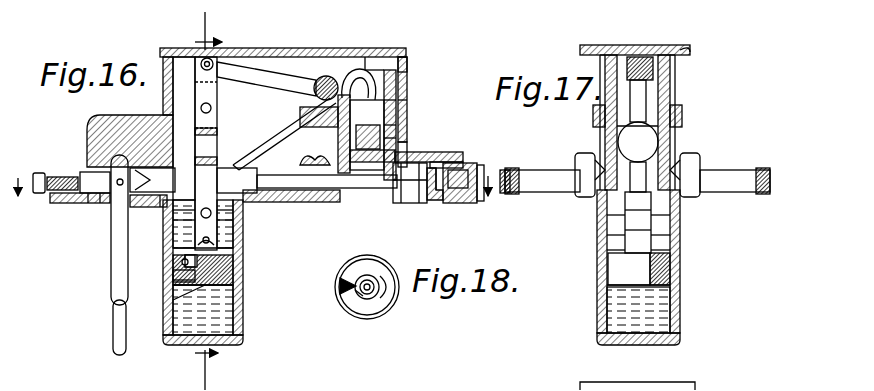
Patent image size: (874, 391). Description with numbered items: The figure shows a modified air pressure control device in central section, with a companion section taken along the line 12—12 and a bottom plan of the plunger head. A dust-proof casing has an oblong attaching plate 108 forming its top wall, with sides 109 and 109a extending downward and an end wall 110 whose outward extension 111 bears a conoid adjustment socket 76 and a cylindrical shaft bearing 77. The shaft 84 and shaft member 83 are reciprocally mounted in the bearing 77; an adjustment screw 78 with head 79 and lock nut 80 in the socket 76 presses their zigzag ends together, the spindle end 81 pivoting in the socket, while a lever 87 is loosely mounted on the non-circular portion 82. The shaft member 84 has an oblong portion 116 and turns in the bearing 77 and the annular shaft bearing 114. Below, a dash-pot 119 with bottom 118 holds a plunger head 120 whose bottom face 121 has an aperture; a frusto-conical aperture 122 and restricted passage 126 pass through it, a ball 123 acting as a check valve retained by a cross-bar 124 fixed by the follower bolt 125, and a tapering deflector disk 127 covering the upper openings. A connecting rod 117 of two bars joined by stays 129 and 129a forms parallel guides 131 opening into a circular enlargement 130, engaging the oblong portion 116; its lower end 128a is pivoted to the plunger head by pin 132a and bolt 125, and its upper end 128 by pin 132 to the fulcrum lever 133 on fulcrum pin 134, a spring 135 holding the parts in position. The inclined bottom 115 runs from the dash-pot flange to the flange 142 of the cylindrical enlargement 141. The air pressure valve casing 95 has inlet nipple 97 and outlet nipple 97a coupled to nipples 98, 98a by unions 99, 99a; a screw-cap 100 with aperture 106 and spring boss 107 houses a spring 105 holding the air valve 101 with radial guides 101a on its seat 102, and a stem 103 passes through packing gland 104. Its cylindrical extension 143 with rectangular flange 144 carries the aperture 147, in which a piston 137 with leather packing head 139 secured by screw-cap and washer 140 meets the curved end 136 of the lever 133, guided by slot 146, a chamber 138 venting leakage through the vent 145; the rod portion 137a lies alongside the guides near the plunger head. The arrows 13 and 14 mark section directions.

In FIG. 16, the section line 12 is at (207, 201).
In FIG. 16, the section line arrow 13 is at (257, 177).
In FIG. 16, the valve rod 14 is at (145, 76).
In FIG. 16, the conoid adjustment socket 76 is at (82, 172).
In FIG. 16, the cylindrical shaft bearing 77 is at (119, 205).
In FIG. 16, the adjustment screw 78 is at (50, 197).
In FIG. 16, the head 79 is at (38, 173).
In FIG. 16, the lock nut 80 is at (56, 176).
In FIG. 16, the spindle end 81 is at (88, 204).
In FIG. 16, the non-circular portion 82 is at (104, 204).
In FIG. 16, the shaft member 83 is at (152, 207).
In FIG. 16, the shaft 84 is at (160, 210).
In FIG. 16, the lever 87 is at (111, 258).
In FIG. 16, the air pressure valve casing 95 is at (395, 215).
In FIG. 17, the inlet nipple 97 is at (600, 158).
In FIG. 17, the outlet nipple 97a is at (690, 152).
In FIG. 17, the nipple 98 is at (536, 170).
In FIG. 17, the nipple 98a is at (700, 178).
In FIG. 17, the union 99 is at (578, 165).
In FIG. 17, the union 99a is at (702, 160).
In FIG. 16, the screw-cap 100 is at (481, 201).
In FIG. 16, the air valve 101 is at (430, 200).
In FIG. 16, the radial guide members 101a is at (409, 206).
In FIG. 16, the seat 102 is at (400, 203).
In FIG. 16, the stem 103 is at (244, 210).
In FIG. 16, the packing gland 104 is at (274, 216).
In FIG. 16, the spring 105 is at (446, 206).
In FIG. 16, the cylindrical aperture 106 is at (500, 193).
In FIG. 16, the spring boss 107 is at (456, 203).
In FIG. 16, the attaching plate 108 is at (290, 49).
In FIG. 17, the attaching plate 108 is at (637, 46).
In FIG. 17, the side 109 is at (605, 100).
In FIG. 17, the side 109a is at (672, 87).
In FIG. 16, the end wall 110 is at (163, 98).
In FIG. 16, the outward extension 111 is at (97, 117).
In FIG. 16, the annular shaft bearing 114 is at (250, 192).
In FIG. 17, the annular shaft bearing 114 is at (672, 212).
In FIG. 16, the bottom 115 is at (270, 145).
In FIG. 16, the oblong portion 116 is at (244, 225).
In FIG. 17, the oblong portion 116 is at (600, 212).
In FIG. 16, the connecting rod 117 is at (244, 242).
In FIG. 17, the connecting rod 117 is at (670, 126).
In FIG. 16, the bottom 118 is at (180, 345).
In FIG. 17, the bottom 118 is at (600, 340).
In FIG. 16, the dash-pot 119 is at (243, 330).
In FIG. 17, the dash-pot 119 is at (680, 330).
In FIG. 16, the plunger head 120 is at (244, 276).
In FIG. 18, the plunger head 120 is at (367, 320).
In FIG. 17, the plunger head 120 is at (672, 262).
In FIG. 16, the bottom face 121 is at (244, 290).
In FIG. 18, the bottom face 121 is at (347, 268).
In FIG. 16, the frusto-conical aperture 122 is at (184, 262).
In FIG. 18, the frusto-conical aperture 122 is at (348, 276).
In FIG. 16, the ball 123 is at (178, 278).
In FIG. 18, the ball 123 is at (340, 286).
In FIG. 16, the cross-bar 124 is at (176, 290).
In FIG. 18, the cross-bar 124 is at (348, 292).
In FIG. 16, the follower bolt 125 is at (182, 300).
In FIG. 18, the follower bolt 125 is at (356, 300).
In FIG. 16, the restricted passage 126 is at (244, 262).
In FIG. 18, the restricted passage 126 is at (386, 298).
In FIG. 17, the deflector disk 127 is at (672, 276).
In FIG. 17, the rod head 128 is at (672, 68).
In FIG. 17, the end 128a is at (672, 248).
In FIG. 17, the stay 129 is at (682, 107).
In FIG. 17, the stay 129a is at (605, 245).
In FIG. 17, the circular enlargement 130 is at (659, 141).
In FIG. 17, the parallel guide 131 is at (672, 228).
In FIG. 16, the pin 132 is at (203, 60).
In FIG. 17, the pin 132 is at (690, 52).
In FIG. 16, the pin 132a is at (257, 230).
In FIG. 17, the pin 132a is at (605, 258).
In FIG. 16, the fulcrum lever 133 is at (250, 62).
In FIG. 16, the fulcrum pin 134 is at (324, 76).
In FIG. 16, the spring 135 is at (342, 80).
In FIG. 16, the curved end 136 is at (372, 70).
In FIG. 16, the piston 137 is at (396, 70).
In FIG. 17, the block 137a is at (605, 230).
In FIG. 16, the chamber 138 is at (372, 141).
In FIG. 16, the leather packing head 139 is at (434, 144).
In FIG. 16, the screw-cap and washer 140 is at (440, 154).
In FIG. 16, the cylindrical enlargement 141 is at (420, 72).
In FIG. 16, the flange 142 is at (408, 101).
In FIG. 16, the cylindrical extension 143 is at (396, 100).
In FIG. 16, the lateral rectangular flange 144 is at (388, 125).
In FIG. 16, the vent 145 is at (396, 137).
In FIG. 16, the slot 146 is at (315, 99).
In FIG. 16, the cylindrical aperture 147 is at (337, 162).